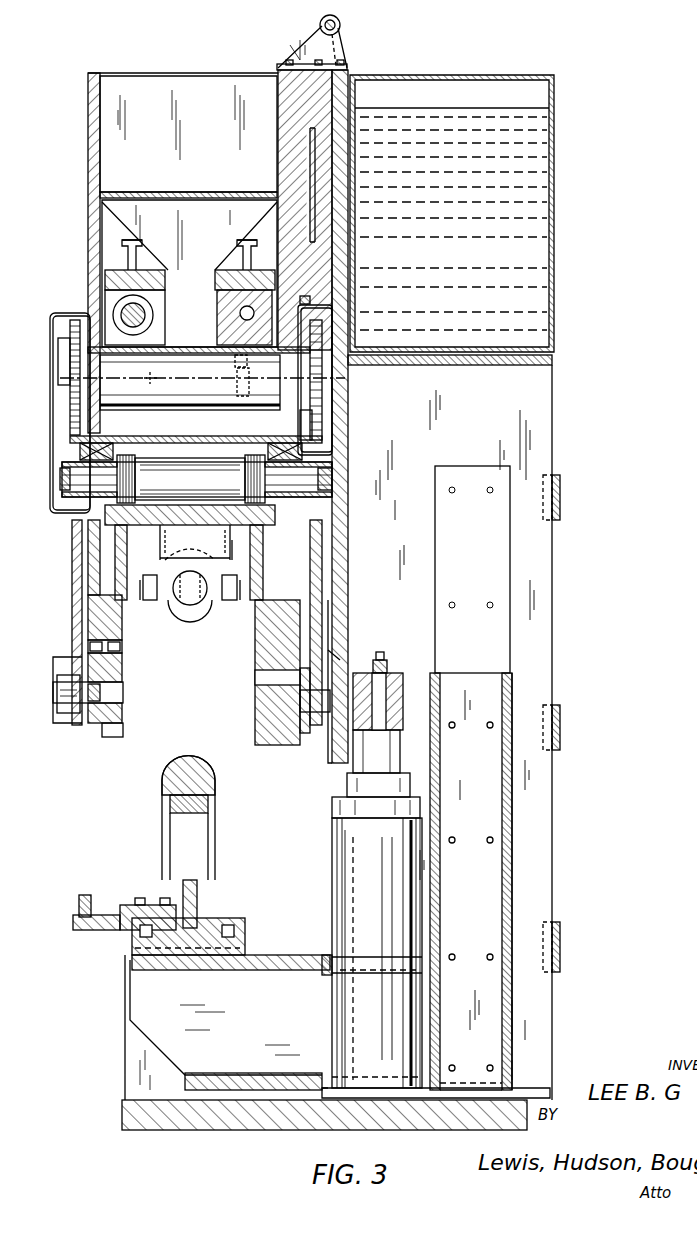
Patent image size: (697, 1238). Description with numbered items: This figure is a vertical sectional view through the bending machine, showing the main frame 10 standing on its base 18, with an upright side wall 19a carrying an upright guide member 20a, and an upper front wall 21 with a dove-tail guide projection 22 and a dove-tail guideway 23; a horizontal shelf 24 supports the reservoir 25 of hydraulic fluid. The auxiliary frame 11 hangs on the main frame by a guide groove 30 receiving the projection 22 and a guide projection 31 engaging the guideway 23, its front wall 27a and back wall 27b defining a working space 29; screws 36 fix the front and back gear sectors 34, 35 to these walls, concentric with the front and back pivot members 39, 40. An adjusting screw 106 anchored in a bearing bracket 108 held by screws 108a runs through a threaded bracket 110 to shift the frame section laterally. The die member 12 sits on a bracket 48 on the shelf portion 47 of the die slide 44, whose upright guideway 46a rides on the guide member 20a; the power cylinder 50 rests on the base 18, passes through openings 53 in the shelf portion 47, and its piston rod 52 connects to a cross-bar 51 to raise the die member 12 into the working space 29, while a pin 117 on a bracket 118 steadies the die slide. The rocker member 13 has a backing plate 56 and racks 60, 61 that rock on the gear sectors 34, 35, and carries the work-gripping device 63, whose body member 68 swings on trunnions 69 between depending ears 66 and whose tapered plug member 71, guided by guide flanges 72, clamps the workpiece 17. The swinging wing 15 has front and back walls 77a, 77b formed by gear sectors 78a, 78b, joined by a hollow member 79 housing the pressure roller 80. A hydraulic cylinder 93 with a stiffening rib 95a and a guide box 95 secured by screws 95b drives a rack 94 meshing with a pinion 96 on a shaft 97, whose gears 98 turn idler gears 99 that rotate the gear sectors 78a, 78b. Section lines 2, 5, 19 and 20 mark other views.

The section line 2- 2 is at (188, 110).
The section line 5- 5 is at (630, 848).
The main frame 10 is at (562, 596).
The auxiliary frame 11 is at (80, 174).
The die member 12 is at (200, 757).
The rocker member 13 is at (105, 541).
The swinging wing 15 is at (62, 581).
The workpiece 17 is at (178, 556).
The base 18 is at (445, 1125).
The section line 19- 19 is at (583, 380).
The upright side wall 19a is at (542, 813).
The section line 20- 20 is at (585, 263).
The upright guide member 20a is at (500, 568).
The front wall 21 is at (364, 416).
The guide projection 22 is at (310, 147).
The guideway 23 is at (345, 640).
The shelf 24 is at (545, 345).
The reservoir 25 is at (554, 208).
The front wall 27a is at (90, 620).
The back wall 27b is at (255, 645).
The working space 29 is at (168, 690).
The guide groove 30 is at (358, 108).
The guide projection 31 is at (345, 665).
The front gear sector 34 is at (118, 680).
The back gear sector 35 is at (255, 678).
The screws 36 is at (115, 648).
The front pivot member 39 is at (66, 695).
The back pivot member 40 is at (300, 725).
The die slide 44 is at (530, 680).
The upright guideway 46a is at (512, 895).
The shelf portion 47 is at (270, 955).
The bracket 48 is at (197, 893).
The power cylinder 50 is at (340, 805).
The cross-bar 51 is at (395, 700).
The piston rod 52 is at (390, 760).
The openings 53 is at (330, 975).
The backing plate 56 is at (212, 470).
The rack 60 is at (145, 578).
The rack 61 is at (240, 575).
The work-gripping device 63 is at (150, 603).
The depending ears 66 is at (232, 558).
The body member 68 is at (225, 560).
The trunnions 69 is at (232, 603).
The tapered plug member 71 is at (200, 605).
The guide flanges 72 is at (183, 605).
The front wall 77a is at (72, 548).
The back wall 77b is at (322, 565).
The gear sector 78a is at (70, 425).
The gear sector 78b is at (312, 425).
The hollow member 79 is at (183, 412).
The pressure roller 80 is at (205, 458).
The hydraulic cylinder 93 is at (105, 300).
The rack 94 is at (225, 312).
The guide box 95 is at (215, 280).
The stiffening rib 95a is at (140, 242).
The screws 95b is at (310, 300).
The pinion 96 is at (243, 396).
The shaft 97 is at (150, 395).
The gear 98 is at (72, 328).
The idler gear 99 is at (70, 405).
The adjusting screw 106 is at (342, 25).
The bearing bracket 108 is at (354, 48).
The screws 108a is at (348, 62).
The threaded bracket 110 is at (297, 50).
The pin 117 is at (80, 897).
The bracket 118 is at (125, 905).